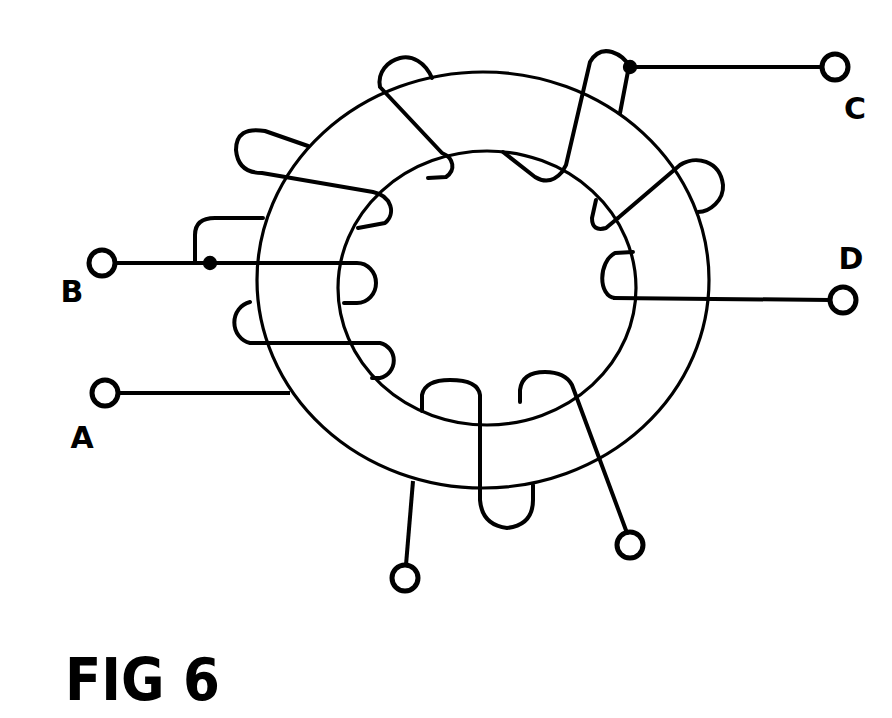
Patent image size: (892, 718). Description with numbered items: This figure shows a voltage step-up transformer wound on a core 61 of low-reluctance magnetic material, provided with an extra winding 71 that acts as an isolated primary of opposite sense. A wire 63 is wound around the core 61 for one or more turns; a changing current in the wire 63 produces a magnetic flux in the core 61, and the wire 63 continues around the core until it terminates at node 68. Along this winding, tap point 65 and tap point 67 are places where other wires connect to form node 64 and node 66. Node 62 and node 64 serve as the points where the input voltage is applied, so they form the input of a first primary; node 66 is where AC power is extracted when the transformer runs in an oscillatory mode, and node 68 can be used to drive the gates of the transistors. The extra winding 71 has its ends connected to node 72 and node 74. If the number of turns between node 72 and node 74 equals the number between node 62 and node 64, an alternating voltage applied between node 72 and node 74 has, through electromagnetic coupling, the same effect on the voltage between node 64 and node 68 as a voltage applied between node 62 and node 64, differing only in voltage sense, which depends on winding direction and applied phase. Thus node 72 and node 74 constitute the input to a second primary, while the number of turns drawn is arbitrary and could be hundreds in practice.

The core 61 is at (490, 110).
The node 62 is at (92, 392).
The wire 63 is at (190, 403).
The node 64 is at (95, 248).
The tap point 65 is at (192, 256).
The node 66 is at (822, 80).
The tap point 67 is at (637, 60).
The node 68 is at (833, 312).
The extra winding 71 is at (402, 510).
The node 72 is at (380, 587).
The node 74 is at (645, 546).